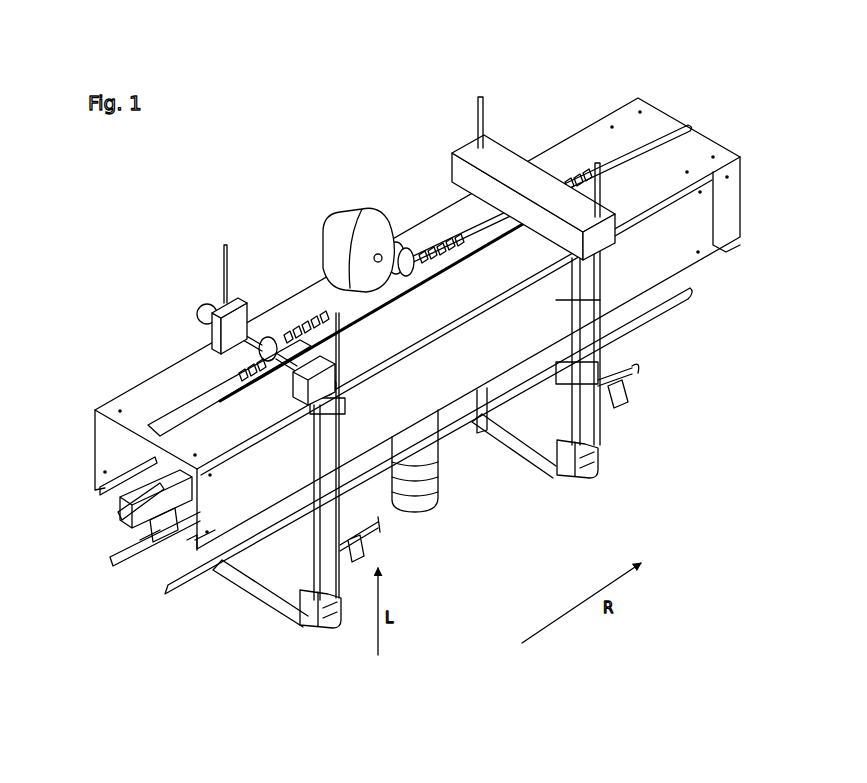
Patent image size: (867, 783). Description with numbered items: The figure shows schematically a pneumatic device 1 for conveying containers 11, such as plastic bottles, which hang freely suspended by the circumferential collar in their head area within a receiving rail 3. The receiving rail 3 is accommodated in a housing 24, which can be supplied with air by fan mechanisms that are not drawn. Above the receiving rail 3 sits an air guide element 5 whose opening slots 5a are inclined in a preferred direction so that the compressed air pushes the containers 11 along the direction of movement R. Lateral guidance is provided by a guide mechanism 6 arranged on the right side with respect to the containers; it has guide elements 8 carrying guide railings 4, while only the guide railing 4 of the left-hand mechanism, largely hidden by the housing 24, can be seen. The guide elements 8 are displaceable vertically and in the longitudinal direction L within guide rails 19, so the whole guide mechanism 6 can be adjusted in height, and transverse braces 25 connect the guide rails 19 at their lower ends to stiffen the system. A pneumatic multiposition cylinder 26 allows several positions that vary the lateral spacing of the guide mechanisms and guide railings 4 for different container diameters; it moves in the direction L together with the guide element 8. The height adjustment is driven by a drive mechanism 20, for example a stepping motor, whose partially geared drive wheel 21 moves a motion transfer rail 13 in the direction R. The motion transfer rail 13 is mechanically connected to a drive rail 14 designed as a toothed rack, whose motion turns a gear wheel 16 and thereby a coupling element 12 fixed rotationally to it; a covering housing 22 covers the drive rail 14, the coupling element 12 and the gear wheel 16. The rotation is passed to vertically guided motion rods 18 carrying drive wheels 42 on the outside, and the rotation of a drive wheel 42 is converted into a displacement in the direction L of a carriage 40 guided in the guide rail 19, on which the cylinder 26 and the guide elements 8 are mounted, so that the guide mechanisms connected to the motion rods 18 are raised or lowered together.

The device 1 is at (320, 180).
The receiving rail 3 is at (133, 520).
The guide railings 4 is at (200, 548).
The air guide element 5 is at (160, 492).
The opening slots 5a is at (160, 550).
The guide mechanism 6 is at (655, 379).
The guide elements 8 is at (557, 478).
The containers 11 is at (420, 508).
The coupling element 12 is at (223, 306).
The motion transfer rail 13 is at (433, 255).
The drive rail 14 is at (313, 326).
The gear wheel 16 is at (213, 322).
The motion rods 18 is at (481, 122).
The guide rails 19 is at (598, 328).
The drive mechanism 20 is at (343, 238).
The drive wheel 21 is at (405, 256).
The covering housing 22 is at (532, 182).
The housing 24 is at (683, 230).
The transverse braces 25 is at (528, 452).
The pneumatic multiposition cylinder 26 is at (620, 410).
The carriage 40 is at (292, 563).
The drive wheels 42 is at (205, 306).